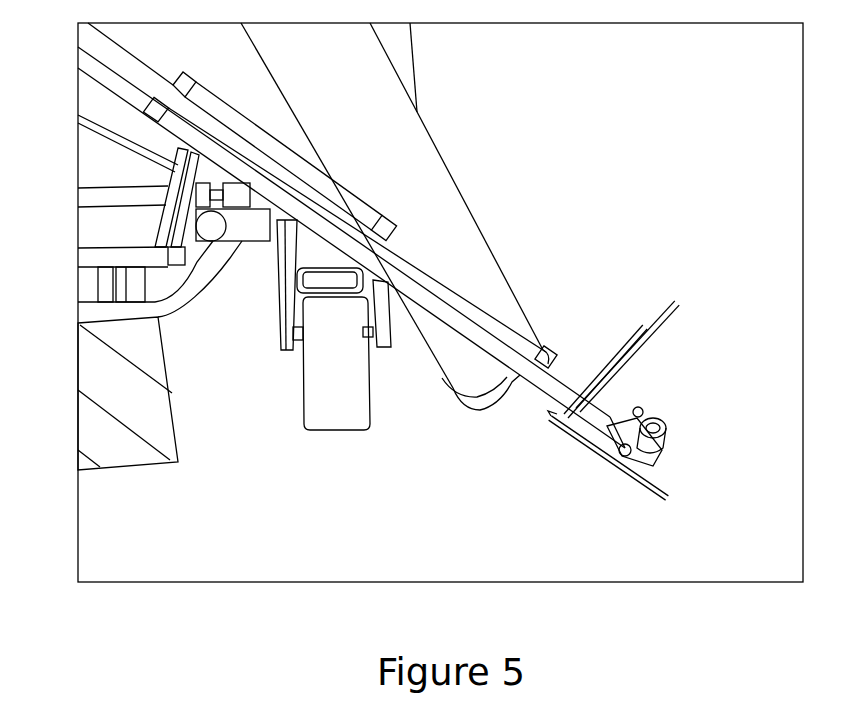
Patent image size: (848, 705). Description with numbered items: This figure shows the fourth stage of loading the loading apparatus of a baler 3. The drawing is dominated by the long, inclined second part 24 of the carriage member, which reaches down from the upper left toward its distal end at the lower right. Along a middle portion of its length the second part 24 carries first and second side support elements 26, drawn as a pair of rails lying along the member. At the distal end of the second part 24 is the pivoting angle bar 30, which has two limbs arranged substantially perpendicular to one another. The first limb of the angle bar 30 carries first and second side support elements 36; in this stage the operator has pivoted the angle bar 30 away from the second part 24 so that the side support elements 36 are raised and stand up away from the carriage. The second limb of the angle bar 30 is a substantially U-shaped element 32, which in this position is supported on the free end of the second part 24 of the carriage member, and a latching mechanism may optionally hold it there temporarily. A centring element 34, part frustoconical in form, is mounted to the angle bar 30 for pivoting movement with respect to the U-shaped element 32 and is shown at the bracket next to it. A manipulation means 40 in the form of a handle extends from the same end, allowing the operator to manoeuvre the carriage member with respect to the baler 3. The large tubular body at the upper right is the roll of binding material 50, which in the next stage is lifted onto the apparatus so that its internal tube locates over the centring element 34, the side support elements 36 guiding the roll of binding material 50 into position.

The baler 3 is at (130, 338).
The second part of the carriage member 24 is at (447, 325).
The first and second side support elements 26 is at (262, 137).
The pivoting angle bar 30 is at (668, 376).
The U-shaped element 32 is at (660, 453).
The centring element 34 is at (667, 427).
The first and second side support elements 36 is at (663, 306).
The manipulation means 40 is at (660, 493).
The roll of binding material 50 is at (405, 152).